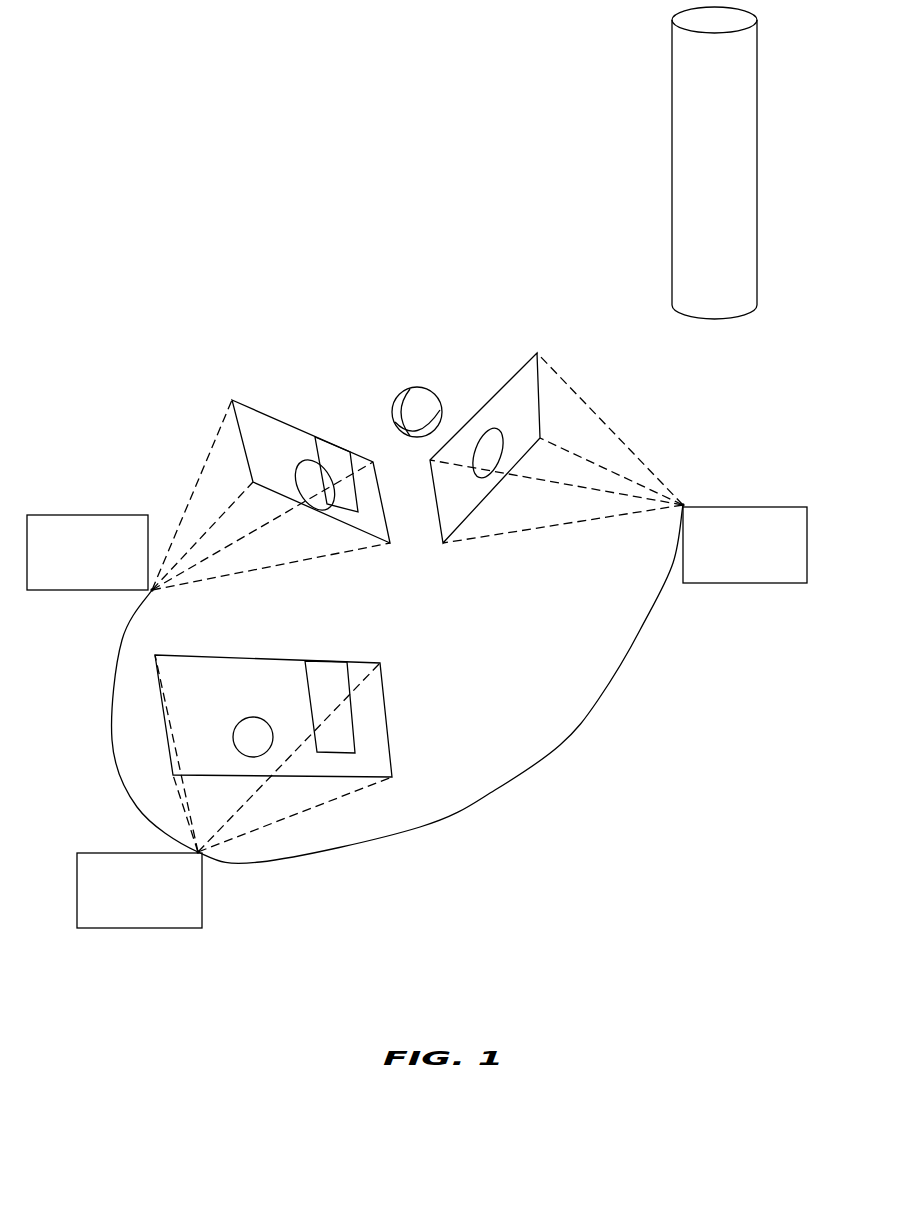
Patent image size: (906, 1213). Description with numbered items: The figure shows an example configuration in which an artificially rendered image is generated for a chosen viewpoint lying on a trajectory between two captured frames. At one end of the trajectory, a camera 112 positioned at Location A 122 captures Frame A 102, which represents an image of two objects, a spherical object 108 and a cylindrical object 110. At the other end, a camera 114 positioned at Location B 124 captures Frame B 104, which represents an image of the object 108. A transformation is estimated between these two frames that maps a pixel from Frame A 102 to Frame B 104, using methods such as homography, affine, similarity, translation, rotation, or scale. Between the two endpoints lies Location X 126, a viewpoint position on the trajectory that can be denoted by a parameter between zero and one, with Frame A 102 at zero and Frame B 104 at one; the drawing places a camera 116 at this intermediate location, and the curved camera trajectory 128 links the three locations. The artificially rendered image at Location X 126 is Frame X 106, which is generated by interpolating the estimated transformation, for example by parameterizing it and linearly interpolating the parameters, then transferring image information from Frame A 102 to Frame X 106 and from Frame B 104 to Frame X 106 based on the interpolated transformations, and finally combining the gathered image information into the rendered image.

The Frame A 102 is at (243, 448).
The Frame B 104 is at (543, 417).
The Frame X 106 is at (387, 732).
The object 108 is at (410, 388).
The object 110 is at (673, 143).
The camera 112 is at (68, 576).
The camera 114 is at (728, 567).
The Camera 116 is at (119, 912).
The Location A 122 is at (152, 592).
The Location B 124 is at (683, 508).
The Location X 126 is at (198, 852).
The Camera Trajectory 128 is at (598, 707).